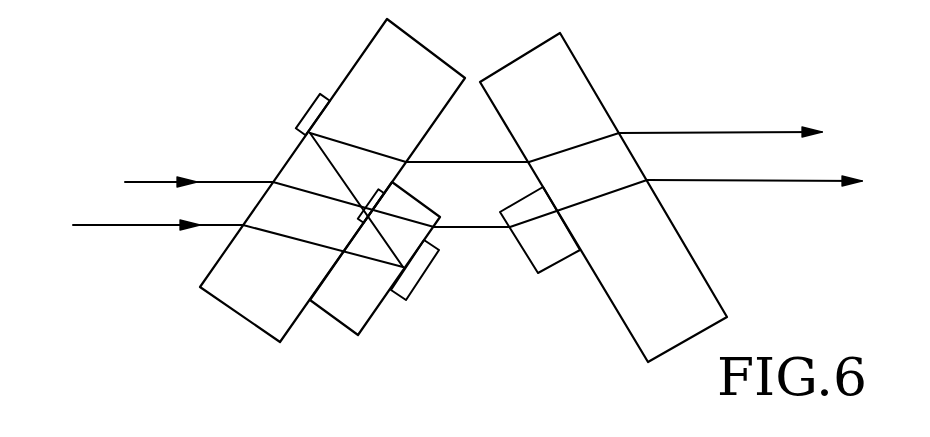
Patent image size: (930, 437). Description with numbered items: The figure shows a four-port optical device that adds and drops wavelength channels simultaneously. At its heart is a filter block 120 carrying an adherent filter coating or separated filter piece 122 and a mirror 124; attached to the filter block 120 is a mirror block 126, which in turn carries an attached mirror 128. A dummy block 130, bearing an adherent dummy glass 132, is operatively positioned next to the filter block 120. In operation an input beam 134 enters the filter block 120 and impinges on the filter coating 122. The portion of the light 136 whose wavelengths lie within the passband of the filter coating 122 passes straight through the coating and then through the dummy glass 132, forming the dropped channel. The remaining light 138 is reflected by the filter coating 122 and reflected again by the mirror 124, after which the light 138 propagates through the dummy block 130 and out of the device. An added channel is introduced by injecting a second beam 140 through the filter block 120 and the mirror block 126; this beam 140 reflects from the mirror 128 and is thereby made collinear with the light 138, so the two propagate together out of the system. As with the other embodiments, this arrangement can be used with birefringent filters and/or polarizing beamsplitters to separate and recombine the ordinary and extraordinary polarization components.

The filter block 120 is at (356, 62).
The filter coating 122 is at (368, 193).
The mirror 124 is at (306, 103).
The mirror block 126 is at (343, 323).
The mirror 128 is at (418, 282).
The dummy block 130 is at (590, 80).
The dummy glass 132 is at (527, 268).
The input beam 134 is at (223, 181).
The light within passband 136 is at (480, 228).
The remaining light 138 is at (448, 162).
The beam 140 is at (160, 228).